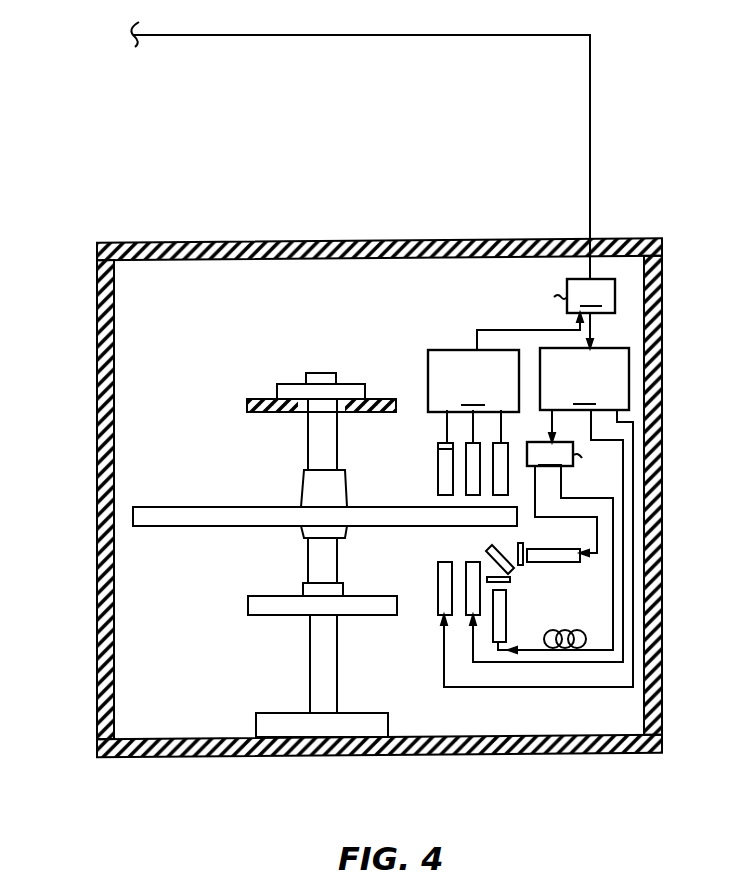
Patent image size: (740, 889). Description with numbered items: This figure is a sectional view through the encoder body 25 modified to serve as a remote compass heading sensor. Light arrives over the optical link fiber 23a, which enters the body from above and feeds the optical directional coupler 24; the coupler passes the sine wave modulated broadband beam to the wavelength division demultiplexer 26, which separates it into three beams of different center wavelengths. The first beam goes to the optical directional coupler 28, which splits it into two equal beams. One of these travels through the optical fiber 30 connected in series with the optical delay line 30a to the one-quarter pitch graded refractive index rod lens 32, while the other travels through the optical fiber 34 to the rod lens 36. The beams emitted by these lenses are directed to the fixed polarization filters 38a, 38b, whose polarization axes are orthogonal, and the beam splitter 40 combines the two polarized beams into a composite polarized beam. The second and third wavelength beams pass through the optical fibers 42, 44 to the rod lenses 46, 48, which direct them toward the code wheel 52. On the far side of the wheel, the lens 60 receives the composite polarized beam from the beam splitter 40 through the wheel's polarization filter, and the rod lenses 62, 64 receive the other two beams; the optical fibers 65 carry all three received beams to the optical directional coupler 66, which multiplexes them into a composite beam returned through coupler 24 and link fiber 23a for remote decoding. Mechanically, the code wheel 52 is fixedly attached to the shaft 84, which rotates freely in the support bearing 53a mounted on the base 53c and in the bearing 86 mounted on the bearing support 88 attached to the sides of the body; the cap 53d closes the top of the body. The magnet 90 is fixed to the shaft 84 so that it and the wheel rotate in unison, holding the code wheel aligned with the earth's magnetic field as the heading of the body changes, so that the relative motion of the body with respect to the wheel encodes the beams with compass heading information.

The optical link fiber 23a is at (360, 35).
The optical directional coupler 24 is at (558, 313).
The encoder body 25 is at (345, 502).
The wavelength division demultiplexer 26 is at (584, 379).
The optical directional coupler 28 is at (574, 439).
The optical fiber 30 is at (610, 570).
The optical delay line 30a is at (600, 632).
The one-quarter pitch graded refractive index rod lens 32 is at (506, 617).
The optical fiber 34 is at (595, 517).
The one-quarter pitch graded refractive index rod lens 36 is at (561, 550).
The fixed polarization filter 38a is at (510, 580).
The fixed polarization filter 38b is at (515, 551).
The beam splitter 40 is at (488, 556).
The optical fiber 42 is at (444, 656).
The optical fiber 44 is at (497, 662).
The one-quarter pitch graded refractive index rod lens 46 is at (438, 579).
The one-quarter pitch graded refractive index rod lens 48 is at (462, 598).
The code wheel 52 is at (188, 507).
The support bearing 53a is at (291, 713).
The base 53c is at (214, 757).
The cap 53d is at (409, 240).
The one-quarter pitch graded refractive index lens 60 is at (508, 470).
The one-quarter pitch graded refractive index rod lens 62 is at (438, 470).
The one-quarter pitch graded refractive index rod lens 64 is at (466, 454).
The optical fibers 65 is at (500, 425).
The optical directional coupler 66 is at (505, 362).
The shaft 84 is at (308, 437).
The support bearing 86 is at (300, 381).
The bearing support 88 is at (247, 405).
The magnet 90 is at (248, 599).